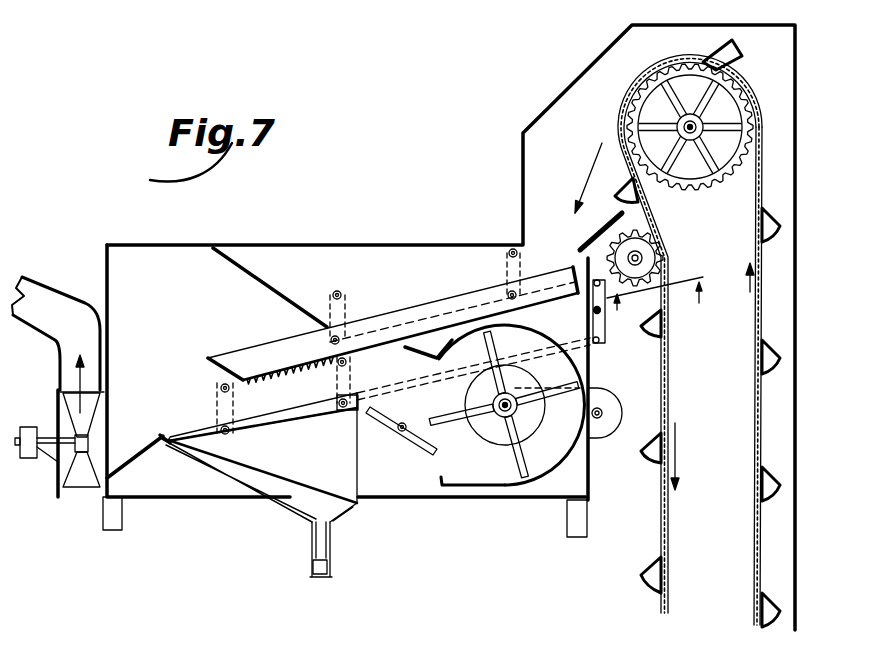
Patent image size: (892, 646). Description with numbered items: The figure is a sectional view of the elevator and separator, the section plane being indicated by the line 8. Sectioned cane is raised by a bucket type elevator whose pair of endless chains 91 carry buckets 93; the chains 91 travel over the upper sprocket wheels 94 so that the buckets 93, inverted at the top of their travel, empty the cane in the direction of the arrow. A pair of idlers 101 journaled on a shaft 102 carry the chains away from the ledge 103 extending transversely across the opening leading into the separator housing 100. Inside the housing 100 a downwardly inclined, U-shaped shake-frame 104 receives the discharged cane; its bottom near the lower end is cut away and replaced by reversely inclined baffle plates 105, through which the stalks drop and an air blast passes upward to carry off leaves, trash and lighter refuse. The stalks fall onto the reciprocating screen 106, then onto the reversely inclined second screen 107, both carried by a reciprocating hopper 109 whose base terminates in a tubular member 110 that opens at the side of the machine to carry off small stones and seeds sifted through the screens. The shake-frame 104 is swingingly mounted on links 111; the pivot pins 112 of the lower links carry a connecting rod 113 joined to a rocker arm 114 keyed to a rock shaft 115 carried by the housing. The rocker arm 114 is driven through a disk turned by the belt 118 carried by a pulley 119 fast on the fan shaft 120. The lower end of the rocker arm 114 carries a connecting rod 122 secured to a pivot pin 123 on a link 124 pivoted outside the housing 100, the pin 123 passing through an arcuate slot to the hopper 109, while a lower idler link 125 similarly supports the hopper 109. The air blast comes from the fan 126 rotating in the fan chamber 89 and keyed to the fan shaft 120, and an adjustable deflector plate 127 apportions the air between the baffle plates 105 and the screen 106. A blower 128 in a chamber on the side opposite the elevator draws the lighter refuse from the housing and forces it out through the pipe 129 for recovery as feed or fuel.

The section line 8- 8 is at (663, 294).
The fan chamber 89 is at (508, 486).
The endless chains 91 is at (755, 540).
The buckets 93 is at (780, 355).
The upper sprocket wheels 94 is at (720, 78).
The separator housing 100 is at (330, 243).
The idlers 101 is at (650, 236).
The idler shaft 102 is at (643, 258).
The ledge 103 is at (615, 217).
The shake-frame 104 is at (383, 343).
The baffle plates 105 is at (270, 372).
The screen 106 is at (313, 418).
The second screen 107 is at (293, 483).
The hopper 109 is at (227, 475).
The tubular member 110 is at (310, 565).
The links 111 is at (347, 307).
The pivot pins 112 is at (328, 335).
The connecting rod 113 is at (420, 315).
The rocker arm 114 is at (603, 325).
The rock shaft 115 is at (594, 312).
The belt 118 is at (558, 445).
The pulley 119 is at (493, 420).
The fan shaft 120 is at (500, 413).
The connecting rod 122 is at (545, 348).
The pivot pin 123 is at (336, 399).
The link 124 is at (352, 378).
The lower idler link 125 is at (217, 404).
The fan 126 is at (457, 407).
The deflector plate 127 is at (402, 431).
The blower 128 is at (80, 482).
The pipe 129 is at (40, 300).